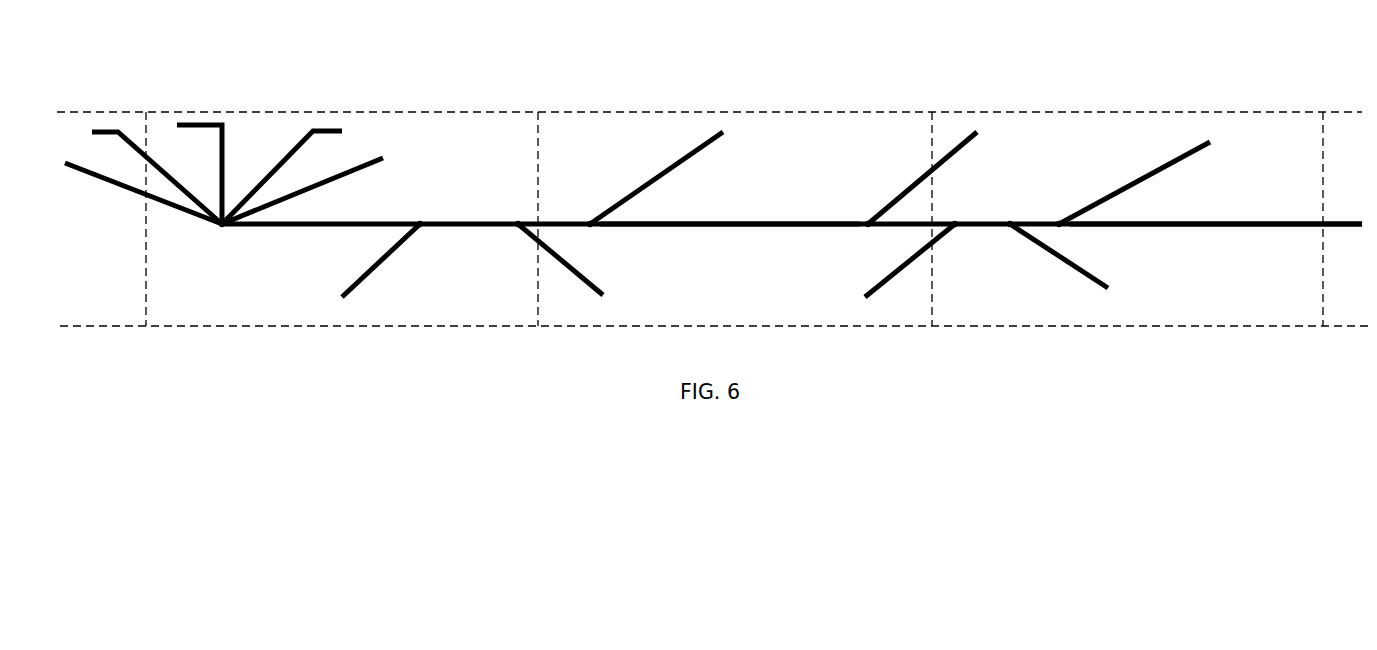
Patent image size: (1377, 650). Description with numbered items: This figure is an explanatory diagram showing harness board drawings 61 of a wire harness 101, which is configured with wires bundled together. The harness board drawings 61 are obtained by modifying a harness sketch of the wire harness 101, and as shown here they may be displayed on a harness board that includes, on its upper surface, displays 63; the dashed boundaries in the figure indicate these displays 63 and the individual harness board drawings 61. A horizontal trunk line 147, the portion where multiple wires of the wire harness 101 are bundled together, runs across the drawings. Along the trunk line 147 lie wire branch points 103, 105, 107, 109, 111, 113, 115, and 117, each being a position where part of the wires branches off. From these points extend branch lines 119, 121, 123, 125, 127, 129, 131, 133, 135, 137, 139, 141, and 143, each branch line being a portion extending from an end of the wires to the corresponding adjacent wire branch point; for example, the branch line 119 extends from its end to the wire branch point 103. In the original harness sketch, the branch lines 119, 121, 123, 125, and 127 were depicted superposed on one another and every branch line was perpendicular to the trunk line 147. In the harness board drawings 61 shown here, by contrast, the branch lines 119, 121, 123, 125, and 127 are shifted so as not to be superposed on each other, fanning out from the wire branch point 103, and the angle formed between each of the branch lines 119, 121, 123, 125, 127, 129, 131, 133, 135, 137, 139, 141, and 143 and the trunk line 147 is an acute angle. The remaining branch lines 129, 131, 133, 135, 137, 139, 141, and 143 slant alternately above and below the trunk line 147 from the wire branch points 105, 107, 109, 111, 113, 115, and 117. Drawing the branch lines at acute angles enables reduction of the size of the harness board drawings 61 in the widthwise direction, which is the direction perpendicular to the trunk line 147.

The harness board drawing 61 is at (438, 138).
The display 63 is at (90, 112).
The wire harness 101 is at (1252, 185).
The wire branch point 103 is at (218, 230).
The wire branch point 105 is at (412, 222).
The wire branch point 107 is at (510, 222).
The wire branch point 109 is at (590, 230).
The wire branch point 111 is at (868, 230).
The wire branch point 113 is at (953, 222).
The wire branch point 115 is at (1013, 222).
The wire branch point 117 is at (1060, 230).
The branch line 119 is at (102, 182).
The branch line 121 is at (122, 147).
The branch line 123 is at (223, 148).
The branch line 125 is at (297, 158).
The branch line 127 is at (327, 187).
The branch line 129 is at (395, 260).
The branch line 131 is at (567, 267).
The branch line 133 is at (670, 168).
The branch line 135 is at (908, 178).
The branch line 137 is at (910, 270).
The branch line 139 is at (1052, 262).
The branch line 141 is at (1163, 163).
The branch line 143 is at (1227, 230).
The trunk line 147 is at (728, 230).